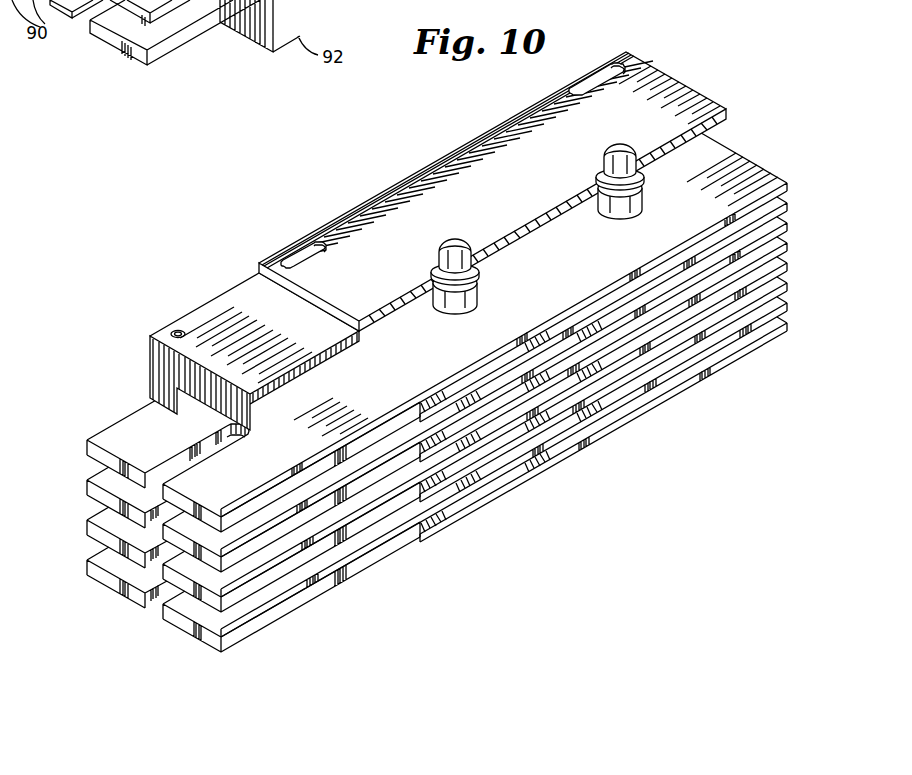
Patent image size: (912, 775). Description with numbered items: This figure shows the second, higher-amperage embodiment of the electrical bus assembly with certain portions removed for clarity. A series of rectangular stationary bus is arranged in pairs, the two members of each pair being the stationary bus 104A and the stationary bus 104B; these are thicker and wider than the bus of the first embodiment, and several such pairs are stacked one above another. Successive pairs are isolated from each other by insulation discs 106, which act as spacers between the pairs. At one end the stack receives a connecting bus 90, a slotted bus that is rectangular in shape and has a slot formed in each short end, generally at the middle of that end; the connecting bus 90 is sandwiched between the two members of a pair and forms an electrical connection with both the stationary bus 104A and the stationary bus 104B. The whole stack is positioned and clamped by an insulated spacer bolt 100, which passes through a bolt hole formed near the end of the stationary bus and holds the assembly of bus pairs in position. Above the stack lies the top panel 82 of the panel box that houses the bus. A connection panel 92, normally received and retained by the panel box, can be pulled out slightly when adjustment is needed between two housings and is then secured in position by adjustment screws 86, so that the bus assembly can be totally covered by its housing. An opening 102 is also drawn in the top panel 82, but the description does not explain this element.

The cover plate 82 is at (430, 186).
The mounting slot 86 is at (300, 250).
The terminal tabs 90 is at (87, 571).
The end clamp block 92 is at (225, 326).
The bolt and nut 100 is at (606, 158).
The slot 102 is at (613, 52).
The bus bar 104A is at (787, 183).
The bus bar 104B is at (787, 203).
The insulating standoff 106 is at (482, 287).